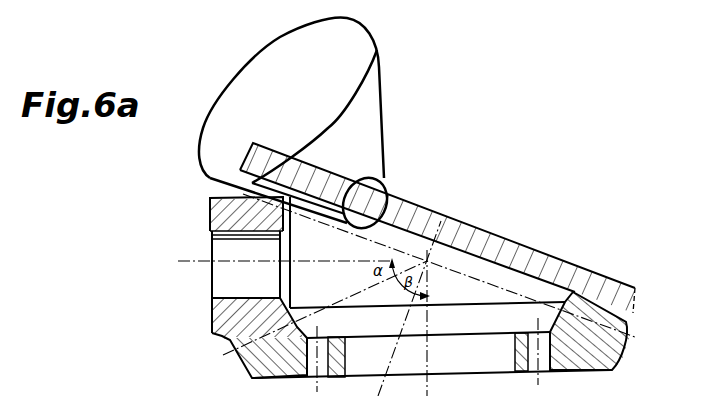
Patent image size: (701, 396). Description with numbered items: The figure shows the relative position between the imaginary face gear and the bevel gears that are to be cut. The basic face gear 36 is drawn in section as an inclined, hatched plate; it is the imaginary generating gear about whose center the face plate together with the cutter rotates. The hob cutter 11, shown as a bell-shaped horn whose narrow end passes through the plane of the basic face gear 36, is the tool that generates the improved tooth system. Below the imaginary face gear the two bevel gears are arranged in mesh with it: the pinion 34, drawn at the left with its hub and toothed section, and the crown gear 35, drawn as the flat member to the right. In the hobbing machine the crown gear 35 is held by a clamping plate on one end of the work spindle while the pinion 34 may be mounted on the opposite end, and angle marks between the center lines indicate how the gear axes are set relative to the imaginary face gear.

The hob cutter 11 is at (243, 76).
The pinion 34 is at (258, 287).
The crown gear 35 is at (441, 335).
The basic face gear 36 is at (603, 283).